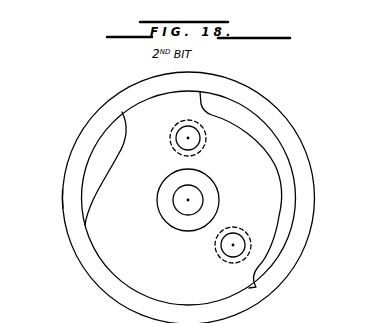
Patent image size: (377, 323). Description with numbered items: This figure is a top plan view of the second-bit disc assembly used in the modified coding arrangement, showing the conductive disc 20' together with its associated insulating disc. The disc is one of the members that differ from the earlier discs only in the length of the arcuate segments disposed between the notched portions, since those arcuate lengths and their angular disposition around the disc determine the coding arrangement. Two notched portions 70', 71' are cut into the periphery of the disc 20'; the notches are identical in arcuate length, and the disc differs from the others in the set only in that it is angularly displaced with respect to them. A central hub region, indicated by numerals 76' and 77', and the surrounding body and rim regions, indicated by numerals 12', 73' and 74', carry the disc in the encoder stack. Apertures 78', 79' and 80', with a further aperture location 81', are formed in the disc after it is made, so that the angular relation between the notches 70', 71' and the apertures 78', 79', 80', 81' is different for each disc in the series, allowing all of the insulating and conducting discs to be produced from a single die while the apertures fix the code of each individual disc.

The bit body 12' is at (190, 197).
The conductive disc 20' is at (189, 197).
The notched portion 70' is at (241, 190).
The notched portion 71' is at (112, 168).
The inner rim of bit face 73' is at (216, 198).
The peripheral band 74' is at (59, 191).
The central hub 76' is at (172, 200).
The central bore 77' is at (170, 218).
The aperture 78' is at (212, 249).
The aperture 79' is at (223, 260).
The aperture 80' is at (206, 138).
The hidden counterbore of upper hole 81' is at (205, 141).